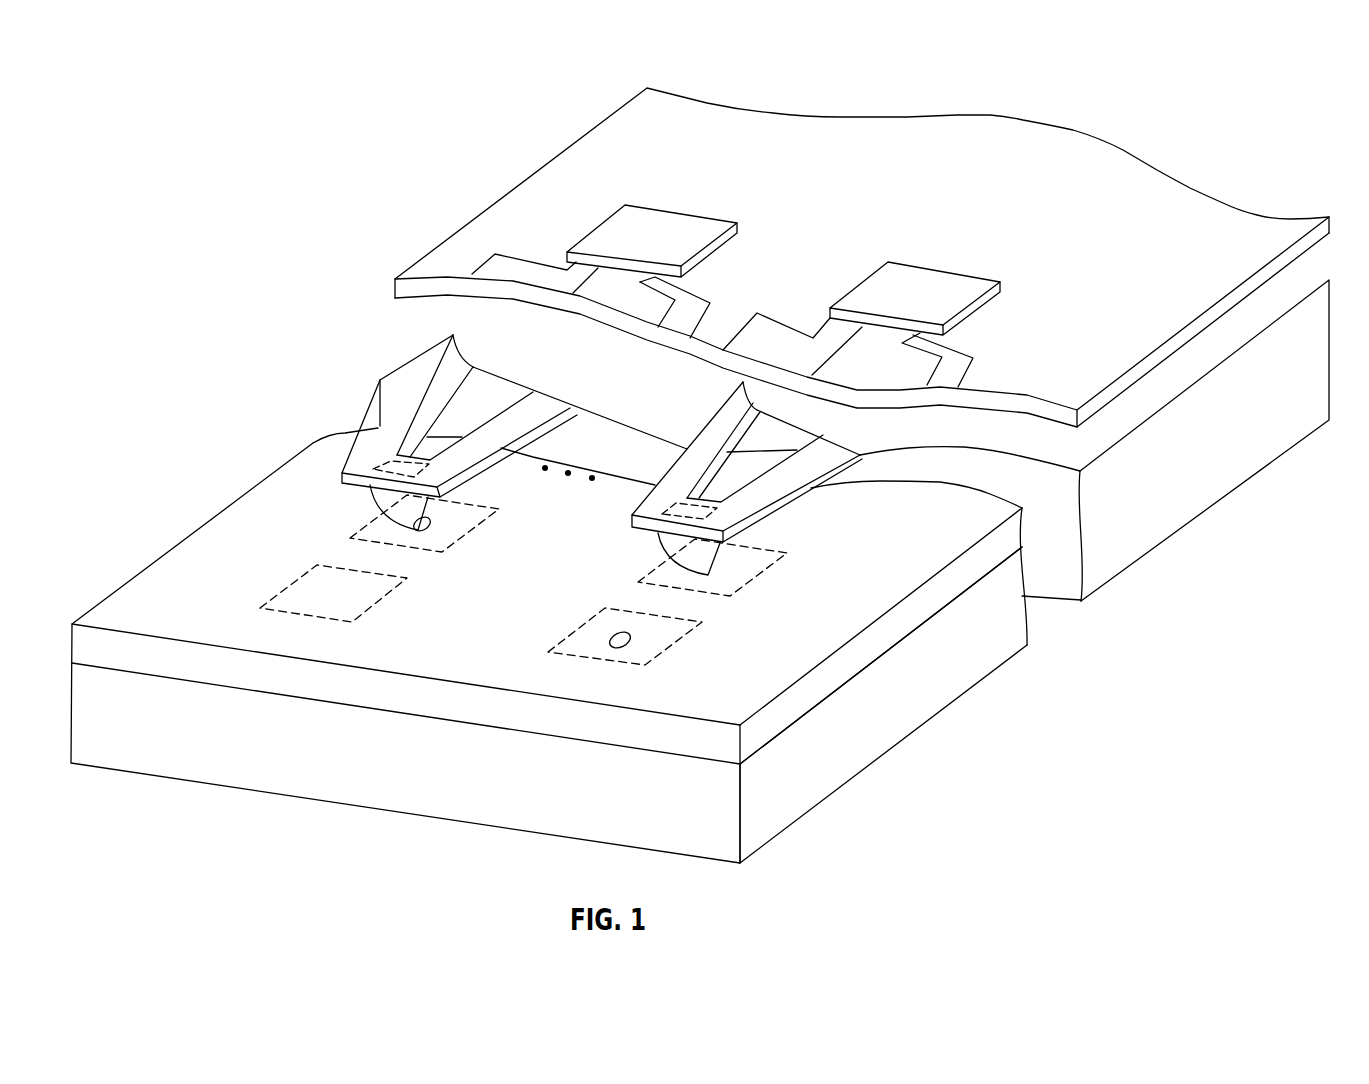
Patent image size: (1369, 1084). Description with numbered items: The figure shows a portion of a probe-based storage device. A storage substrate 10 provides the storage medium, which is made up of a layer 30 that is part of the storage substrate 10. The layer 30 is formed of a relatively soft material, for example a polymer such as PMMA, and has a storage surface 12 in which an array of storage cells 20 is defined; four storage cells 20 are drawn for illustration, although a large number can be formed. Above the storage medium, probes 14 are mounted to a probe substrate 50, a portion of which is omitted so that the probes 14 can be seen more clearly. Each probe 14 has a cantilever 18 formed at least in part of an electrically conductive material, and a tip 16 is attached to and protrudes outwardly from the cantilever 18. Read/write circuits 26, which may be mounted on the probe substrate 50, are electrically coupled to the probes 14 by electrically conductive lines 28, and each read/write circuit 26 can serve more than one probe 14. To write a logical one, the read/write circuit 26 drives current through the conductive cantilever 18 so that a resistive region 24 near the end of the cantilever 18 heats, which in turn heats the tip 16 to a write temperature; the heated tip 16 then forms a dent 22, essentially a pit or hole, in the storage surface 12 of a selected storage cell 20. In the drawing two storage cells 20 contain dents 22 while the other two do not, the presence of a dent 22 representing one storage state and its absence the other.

The storage substrate 10 is at (398, 800).
The storage surface 12 is at (212, 542).
The probe 14 is at (390, 352).
The tip 16 is at (383, 502).
The cantilever 18 is at (407, 408).
The storage cell 20 is at (407, 578).
The dent 22 is at (428, 532).
The resistive region 24 is at (388, 466).
The read/write circuit 26 is at (635, 223).
The electrically conductive line 28 is at (690, 300).
The layer 30 is at (778, 712).
The probe substrate 50 is at (488, 232).